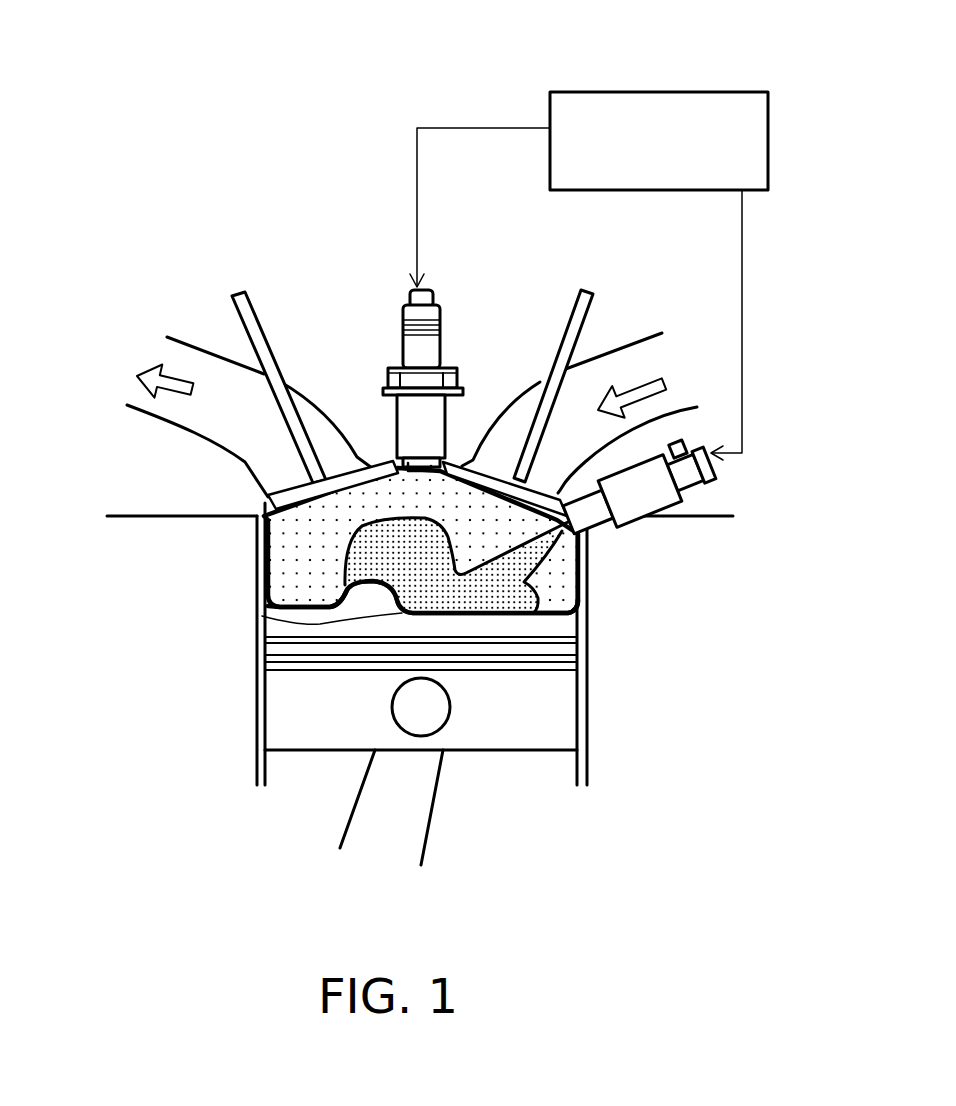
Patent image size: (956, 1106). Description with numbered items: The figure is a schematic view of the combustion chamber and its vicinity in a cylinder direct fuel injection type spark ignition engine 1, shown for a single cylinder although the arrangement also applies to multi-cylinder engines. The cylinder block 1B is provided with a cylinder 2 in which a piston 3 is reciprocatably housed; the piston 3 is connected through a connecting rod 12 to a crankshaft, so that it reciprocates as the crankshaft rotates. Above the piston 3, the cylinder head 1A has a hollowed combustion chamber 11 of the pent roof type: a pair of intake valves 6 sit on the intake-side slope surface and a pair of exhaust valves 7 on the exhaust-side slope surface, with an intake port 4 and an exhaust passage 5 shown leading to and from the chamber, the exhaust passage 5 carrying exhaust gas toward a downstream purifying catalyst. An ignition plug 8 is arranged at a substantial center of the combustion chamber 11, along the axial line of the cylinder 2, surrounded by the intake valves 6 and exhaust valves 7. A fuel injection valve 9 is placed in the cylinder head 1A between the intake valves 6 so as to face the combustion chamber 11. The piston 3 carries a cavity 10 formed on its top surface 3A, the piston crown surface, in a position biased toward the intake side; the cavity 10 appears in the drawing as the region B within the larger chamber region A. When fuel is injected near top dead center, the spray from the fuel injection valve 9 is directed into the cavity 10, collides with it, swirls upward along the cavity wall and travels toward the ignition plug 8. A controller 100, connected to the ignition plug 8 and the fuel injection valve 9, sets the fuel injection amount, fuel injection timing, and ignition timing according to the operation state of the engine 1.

The engine 1 is at (214, 243).
The cylinder head 1A is at (84, 472).
The cylinder block 1B is at (84, 588).
The cylinder 2 is at (256, 707).
The piston 3 is at (473, 730).
The top surface 3A is at (528, 614).
The intake port 4 is at (637, 355).
The exhaust passage 5 is at (195, 354).
The intake valves 6 is at (571, 318).
The exhaust valves 7 is at (248, 300).
The ignition plug 8 is at (402, 347).
The fuel injection valve 9 is at (625, 503).
The cavity 10 is at (262, 616).
The combustion chamber 11 is at (371, 461).
The connecting rod 12 is at (412, 808).
The controller 100 is at (585, 107).
The combustion chamber region A is at (292, 575).
The cavity region B is at (390, 553).